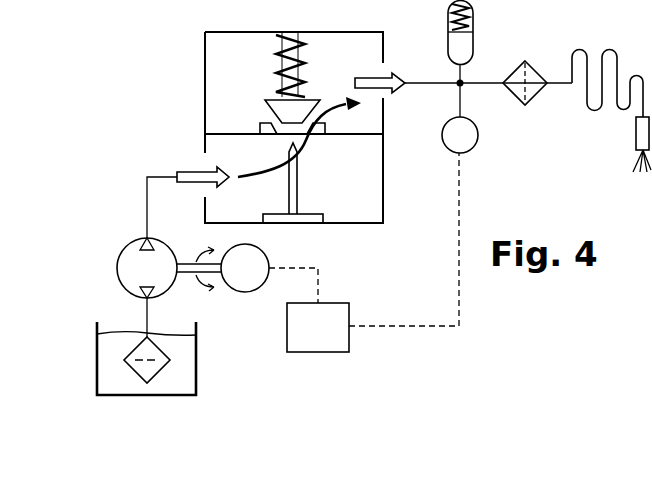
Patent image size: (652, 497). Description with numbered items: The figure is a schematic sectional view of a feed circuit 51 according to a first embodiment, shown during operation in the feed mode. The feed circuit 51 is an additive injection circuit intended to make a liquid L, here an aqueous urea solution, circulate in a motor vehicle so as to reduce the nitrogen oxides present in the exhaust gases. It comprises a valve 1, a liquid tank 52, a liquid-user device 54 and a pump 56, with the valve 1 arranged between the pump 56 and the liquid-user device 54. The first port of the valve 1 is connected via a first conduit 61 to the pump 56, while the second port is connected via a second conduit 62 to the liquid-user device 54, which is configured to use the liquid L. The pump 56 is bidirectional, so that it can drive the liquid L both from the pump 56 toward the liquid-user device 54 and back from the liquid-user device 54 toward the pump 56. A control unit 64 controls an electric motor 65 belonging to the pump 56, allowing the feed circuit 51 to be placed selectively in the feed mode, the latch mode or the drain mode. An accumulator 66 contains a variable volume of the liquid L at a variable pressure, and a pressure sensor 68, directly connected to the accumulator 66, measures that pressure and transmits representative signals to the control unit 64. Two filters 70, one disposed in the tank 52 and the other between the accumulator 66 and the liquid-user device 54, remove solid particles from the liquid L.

The feed circuit 51 is at (174, 26).
The valve 1 is at (205, 63).
The liquid L is at (371, 78).
The first conduit 61 is at (160, 177).
The pump 56 is at (169, 287).
The electric motor 65 is at (245, 292).
The control unit 64 is at (364, 252).
The liquid tank 52 is at (198, 376).
The filters 70 is at (162, 352).
The accumulator 66 is at (468, 50).
The second conduit 62 is at (486, 86).
The pressure sensor 68 is at (468, 150).
The liquid-user device 54 is at (636, 137).